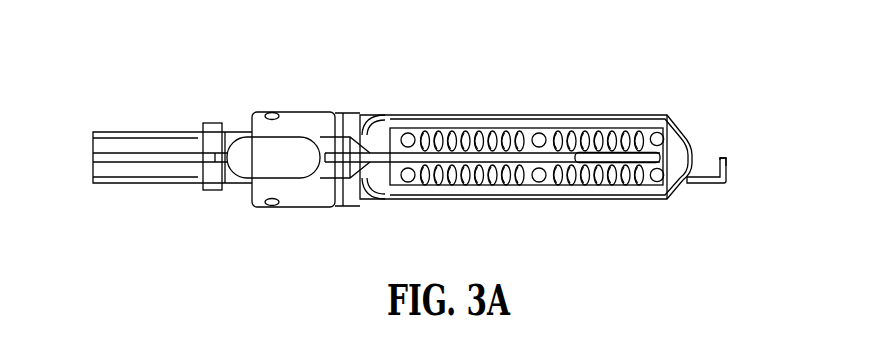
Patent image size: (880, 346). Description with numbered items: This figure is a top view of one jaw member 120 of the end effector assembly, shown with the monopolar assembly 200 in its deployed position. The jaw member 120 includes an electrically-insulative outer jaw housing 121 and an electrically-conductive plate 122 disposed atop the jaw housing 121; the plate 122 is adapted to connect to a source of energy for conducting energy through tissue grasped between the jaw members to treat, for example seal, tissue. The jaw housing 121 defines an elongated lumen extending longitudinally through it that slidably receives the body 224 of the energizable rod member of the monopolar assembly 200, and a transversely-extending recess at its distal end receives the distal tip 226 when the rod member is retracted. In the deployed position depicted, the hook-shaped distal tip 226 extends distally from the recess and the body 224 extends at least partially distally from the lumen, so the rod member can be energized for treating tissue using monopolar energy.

The jaw member 120 is at (400, 146).
The outer jaw housing 121 is at (468, 115).
The electrically-conductive plate 122 is at (513, 173).
The monopolar assembly 200 is at (736, 199).
The body 224 is at (700, 186).
The distal tip 226 is at (718, 190).